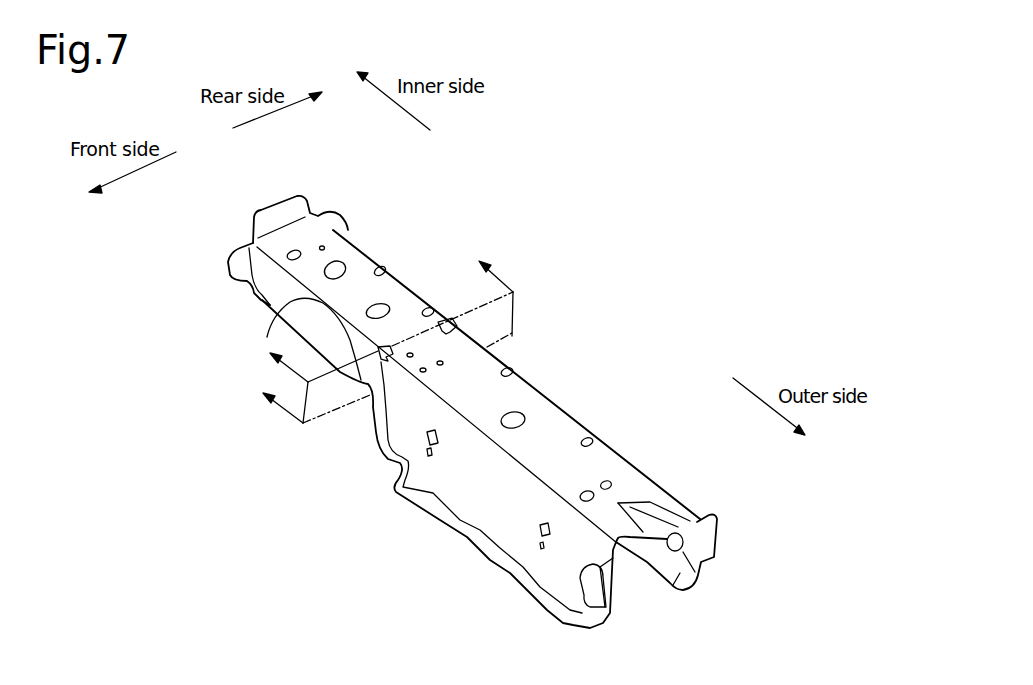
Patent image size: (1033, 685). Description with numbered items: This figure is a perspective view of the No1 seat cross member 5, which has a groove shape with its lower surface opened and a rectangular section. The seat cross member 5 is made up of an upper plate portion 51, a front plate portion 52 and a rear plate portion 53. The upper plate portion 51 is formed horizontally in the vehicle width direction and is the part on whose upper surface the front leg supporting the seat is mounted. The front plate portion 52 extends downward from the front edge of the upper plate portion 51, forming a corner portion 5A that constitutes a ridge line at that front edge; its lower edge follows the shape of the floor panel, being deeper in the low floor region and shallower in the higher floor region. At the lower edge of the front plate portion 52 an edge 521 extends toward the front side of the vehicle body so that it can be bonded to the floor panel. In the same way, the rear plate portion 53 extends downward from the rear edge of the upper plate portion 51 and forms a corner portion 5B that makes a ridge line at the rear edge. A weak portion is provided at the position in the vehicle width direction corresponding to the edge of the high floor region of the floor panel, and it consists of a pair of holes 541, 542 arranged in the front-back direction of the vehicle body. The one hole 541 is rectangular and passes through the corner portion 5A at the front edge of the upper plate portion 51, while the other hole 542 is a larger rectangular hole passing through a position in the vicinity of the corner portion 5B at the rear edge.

The No1 seat cross member 5 is at (573, 335).
The corner portion 5A is at (267, 337).
The corner portion 5B is at (397, 271).
The upper plate portion 51 is at (556, 406).
The front plate portion 52 is at (516, 537).
The edge 521 is at (450, 522).
The rear plate portion 53 is at (668, 592).
The hole 541 is at (378, 356).
The hole 542 is at (444, 320).